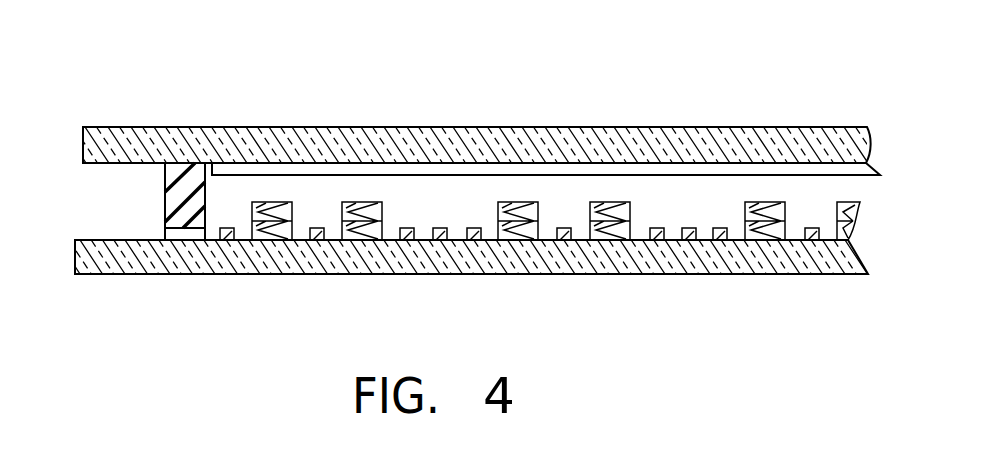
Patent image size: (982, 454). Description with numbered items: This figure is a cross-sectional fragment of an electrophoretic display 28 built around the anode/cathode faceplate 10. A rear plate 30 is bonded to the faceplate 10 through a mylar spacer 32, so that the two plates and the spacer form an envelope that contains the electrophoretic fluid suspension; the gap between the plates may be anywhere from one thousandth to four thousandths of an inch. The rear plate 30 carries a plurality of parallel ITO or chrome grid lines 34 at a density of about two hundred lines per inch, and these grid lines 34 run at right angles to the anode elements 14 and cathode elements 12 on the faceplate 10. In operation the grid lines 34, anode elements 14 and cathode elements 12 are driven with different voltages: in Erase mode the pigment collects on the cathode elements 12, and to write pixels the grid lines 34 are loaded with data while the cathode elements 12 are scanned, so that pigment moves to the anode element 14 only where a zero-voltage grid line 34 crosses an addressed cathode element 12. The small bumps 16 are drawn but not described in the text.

The electrophoretic display 28 is at (152, 91).
The rear plate 30 is at (153, 137).
The grid lines 34 is at (576, 167).
The faceplate 10 is at (147, 270).
The mylar spacer 32 is at (188, 228).
The anode elements 14 is at (518, 188).
The solder bump 16 is at (442, 234).
The cathode elements 12 is at (657, 241).